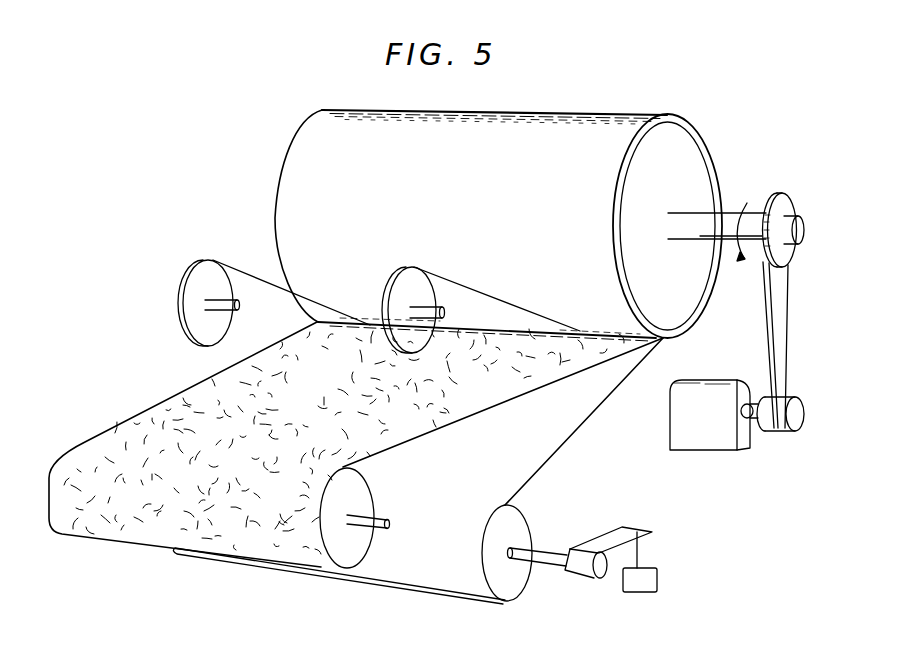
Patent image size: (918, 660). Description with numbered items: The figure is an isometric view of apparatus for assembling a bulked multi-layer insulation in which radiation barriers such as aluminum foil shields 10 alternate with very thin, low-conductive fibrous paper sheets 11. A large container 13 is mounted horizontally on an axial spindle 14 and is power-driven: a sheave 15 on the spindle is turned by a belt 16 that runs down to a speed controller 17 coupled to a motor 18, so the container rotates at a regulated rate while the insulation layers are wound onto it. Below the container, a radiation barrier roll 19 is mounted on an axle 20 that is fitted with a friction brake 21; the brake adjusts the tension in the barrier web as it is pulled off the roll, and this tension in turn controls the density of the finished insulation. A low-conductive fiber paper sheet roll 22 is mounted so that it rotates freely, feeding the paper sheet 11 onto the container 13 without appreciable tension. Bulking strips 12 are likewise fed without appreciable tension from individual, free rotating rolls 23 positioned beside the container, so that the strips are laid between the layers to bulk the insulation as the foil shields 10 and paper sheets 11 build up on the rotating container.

The aluminum foil shields 10 is at (540, 448).
The fibrous paper sheets 11 is at (570, 375).
The bulking strips 12 is at (480, 290).
The container 13 is at (692, 164).
The axial spindle 14 is at (795, 222).
The sheave 15 is at (775, 200).
The belt 16 is at (788, 330).
The speed controller 17 is at (792, 409).
The motor 18 is at (717, 442).
The radiation barrier roll 19 is at (520, 526).
The axle 20 is at (545, 564).
The friction brake 21 is at (650, 533).
The fiber paper sheet roll 22 is at (343, 557).
The free rotating rolls 23 is at (197, 257).